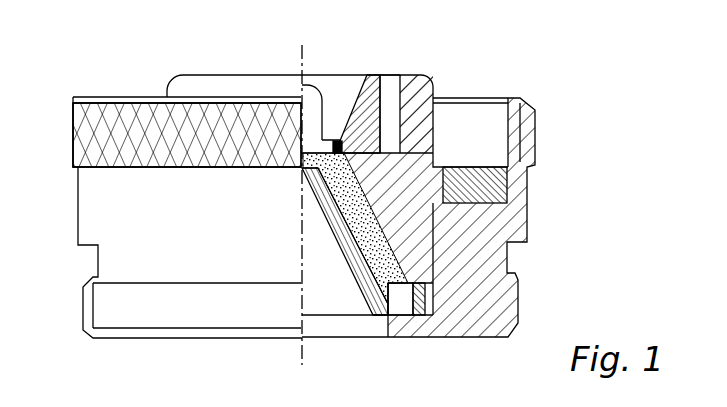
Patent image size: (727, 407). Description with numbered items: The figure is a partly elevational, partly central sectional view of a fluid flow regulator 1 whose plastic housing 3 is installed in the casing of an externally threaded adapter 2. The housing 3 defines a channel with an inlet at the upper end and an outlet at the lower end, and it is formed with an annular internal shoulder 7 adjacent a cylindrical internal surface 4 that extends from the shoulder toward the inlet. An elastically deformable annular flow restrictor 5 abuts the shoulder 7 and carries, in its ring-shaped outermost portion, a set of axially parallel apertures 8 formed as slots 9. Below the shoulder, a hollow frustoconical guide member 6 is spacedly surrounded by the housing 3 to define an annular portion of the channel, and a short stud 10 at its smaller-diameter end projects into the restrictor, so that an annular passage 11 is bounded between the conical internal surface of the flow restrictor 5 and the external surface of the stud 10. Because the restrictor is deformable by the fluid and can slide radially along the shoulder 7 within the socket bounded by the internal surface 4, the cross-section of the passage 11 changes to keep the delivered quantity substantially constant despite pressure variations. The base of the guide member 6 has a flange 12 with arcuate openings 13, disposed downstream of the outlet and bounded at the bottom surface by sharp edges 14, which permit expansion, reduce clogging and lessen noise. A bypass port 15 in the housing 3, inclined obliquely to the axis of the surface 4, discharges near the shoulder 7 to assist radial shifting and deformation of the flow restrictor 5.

The fluid flow regulator 1 is at (534, 70).
The adapter 2 is at (92, 208).
The housing 3 is at (425, 240).
The cylindrical internal surface 4 is at (389, 92).
The flow restrictor 5 is at (367, 77).
The guide member 6 is at (345, 242).
The annular internal shoulder 7 is at (358, 108).
The apertures 8 is at (402, 116).
The slots 9 is at (394, 85).
The stud 10 is at (302, 88).
The annular passage 11 is at (335, 139).
The flange 12 is at (373, 303).
The openings 13 is at (405, 302).
The sharp edges 14 is at (386, 322).
The bypass port 15 is at (417, 143).